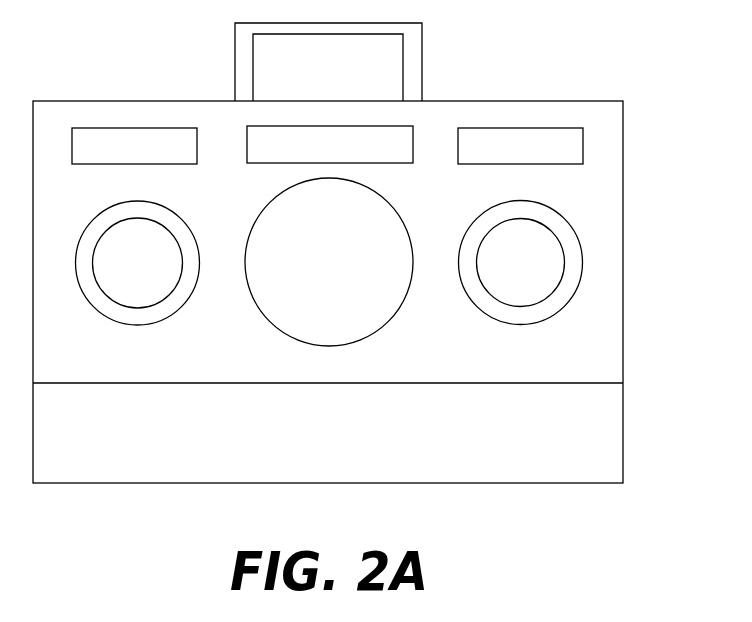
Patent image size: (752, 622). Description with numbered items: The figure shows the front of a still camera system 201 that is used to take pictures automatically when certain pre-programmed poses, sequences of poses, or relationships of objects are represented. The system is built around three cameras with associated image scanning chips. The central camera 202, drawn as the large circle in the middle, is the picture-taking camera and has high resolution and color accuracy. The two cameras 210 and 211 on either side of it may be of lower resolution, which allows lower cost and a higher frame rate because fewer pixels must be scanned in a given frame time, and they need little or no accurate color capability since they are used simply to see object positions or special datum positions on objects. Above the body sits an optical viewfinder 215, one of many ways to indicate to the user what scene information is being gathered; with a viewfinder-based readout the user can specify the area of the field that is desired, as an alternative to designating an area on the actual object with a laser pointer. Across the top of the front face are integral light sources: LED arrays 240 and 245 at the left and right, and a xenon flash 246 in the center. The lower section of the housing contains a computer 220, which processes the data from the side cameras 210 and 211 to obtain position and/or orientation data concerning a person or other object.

The still camera system 201 is at (630, 262).
The optical viewfinder 215 is at (422, 57).
The LED array 240 is at (112, 157).
The xenon flash 246 is at (307, 155).
The LED array 245 is at (497, 157).
The central camera 202 is at (306, 274).
The side camera 210 is at (180, 308).
The side camera 211 is at (493, 315).
The computer 220 is at (623, 425).